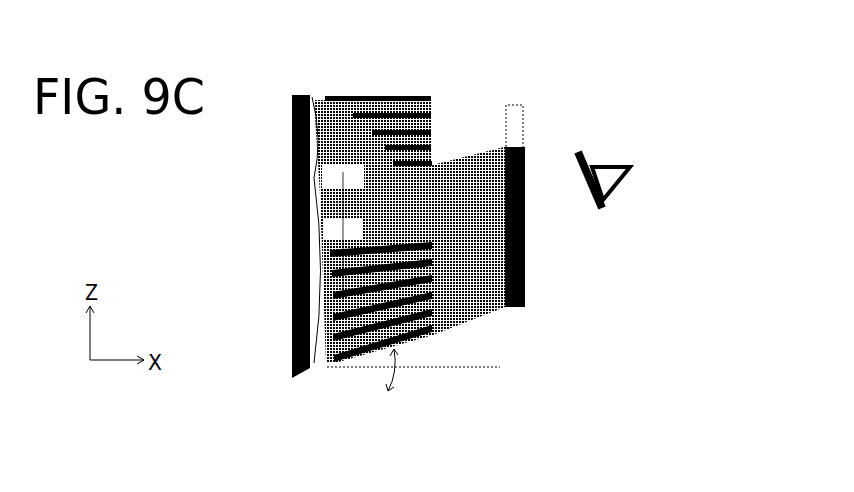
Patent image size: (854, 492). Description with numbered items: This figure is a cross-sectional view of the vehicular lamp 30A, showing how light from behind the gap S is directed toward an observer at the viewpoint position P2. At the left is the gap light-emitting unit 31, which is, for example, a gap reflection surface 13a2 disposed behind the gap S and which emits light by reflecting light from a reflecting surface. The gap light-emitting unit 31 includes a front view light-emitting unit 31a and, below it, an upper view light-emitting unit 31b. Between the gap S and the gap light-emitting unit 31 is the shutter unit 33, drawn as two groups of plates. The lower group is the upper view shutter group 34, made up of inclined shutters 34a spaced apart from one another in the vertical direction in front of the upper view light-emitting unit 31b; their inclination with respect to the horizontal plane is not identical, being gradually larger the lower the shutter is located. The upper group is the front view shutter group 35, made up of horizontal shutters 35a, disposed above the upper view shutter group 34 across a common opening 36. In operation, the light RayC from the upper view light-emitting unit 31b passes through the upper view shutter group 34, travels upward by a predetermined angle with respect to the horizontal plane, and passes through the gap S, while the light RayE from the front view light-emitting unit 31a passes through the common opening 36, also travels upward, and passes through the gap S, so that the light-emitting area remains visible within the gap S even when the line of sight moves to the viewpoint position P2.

The vehicular lamp 30A is at (432, 62).
The gap light-emitting unit 31 is at (303, 95).
The gap reflection surface 13a2 is at (290, 196).
The front view light-emitting unit 31a is at (321, 169).
The upper view light-emitting unit 31b is at (318, 258).
The shutter unit 33 is at (368, 82).
The horizontal shutters 35a is at (402, 95).
The front view shutter group 35 is at (442, 88).
The common opening 36 is at (422, 215).
The upper view shutter group 34 is at (413, 373).
The inclined shutters 34a is at (423, 330).
The light RayE is at (462, 163).
The light RayC is at (332, 368).
The gap S is at (517, 104).
The viewpoint position P2 is at (630, 168).